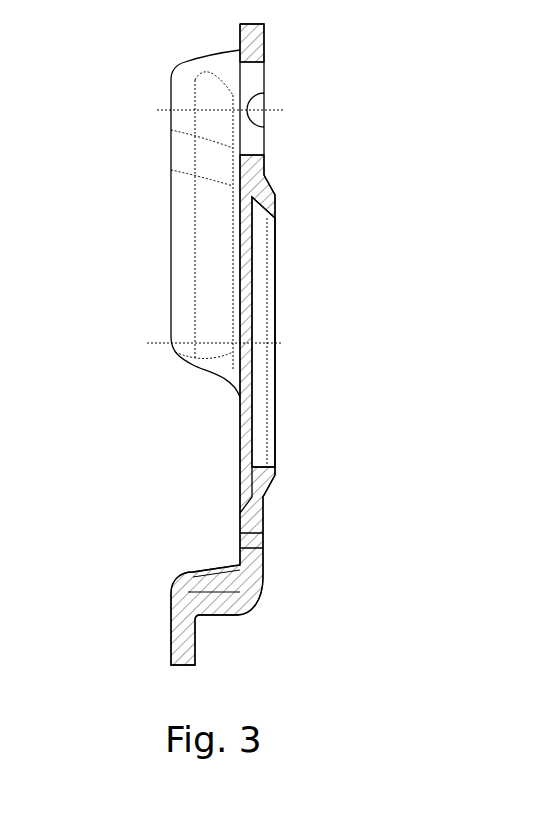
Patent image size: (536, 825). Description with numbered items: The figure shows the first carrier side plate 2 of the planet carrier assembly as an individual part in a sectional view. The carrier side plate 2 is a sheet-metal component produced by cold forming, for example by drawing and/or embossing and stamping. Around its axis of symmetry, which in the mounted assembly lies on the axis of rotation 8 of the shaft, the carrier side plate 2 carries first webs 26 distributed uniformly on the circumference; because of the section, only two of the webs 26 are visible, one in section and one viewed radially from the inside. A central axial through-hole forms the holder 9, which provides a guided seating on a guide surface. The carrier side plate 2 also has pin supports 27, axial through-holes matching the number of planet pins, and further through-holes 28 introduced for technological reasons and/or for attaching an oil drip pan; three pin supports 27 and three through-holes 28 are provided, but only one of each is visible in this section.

The first carrier side plate 2 is at (104, 149).
The first webs 26 is at (186, 228).
The axis of rotation 8 is at (147, 343).
The holder 9 is at (266, 280).
The pin supports 27 is at (265, 68).
The further through-holes 28 is at (267, 545).